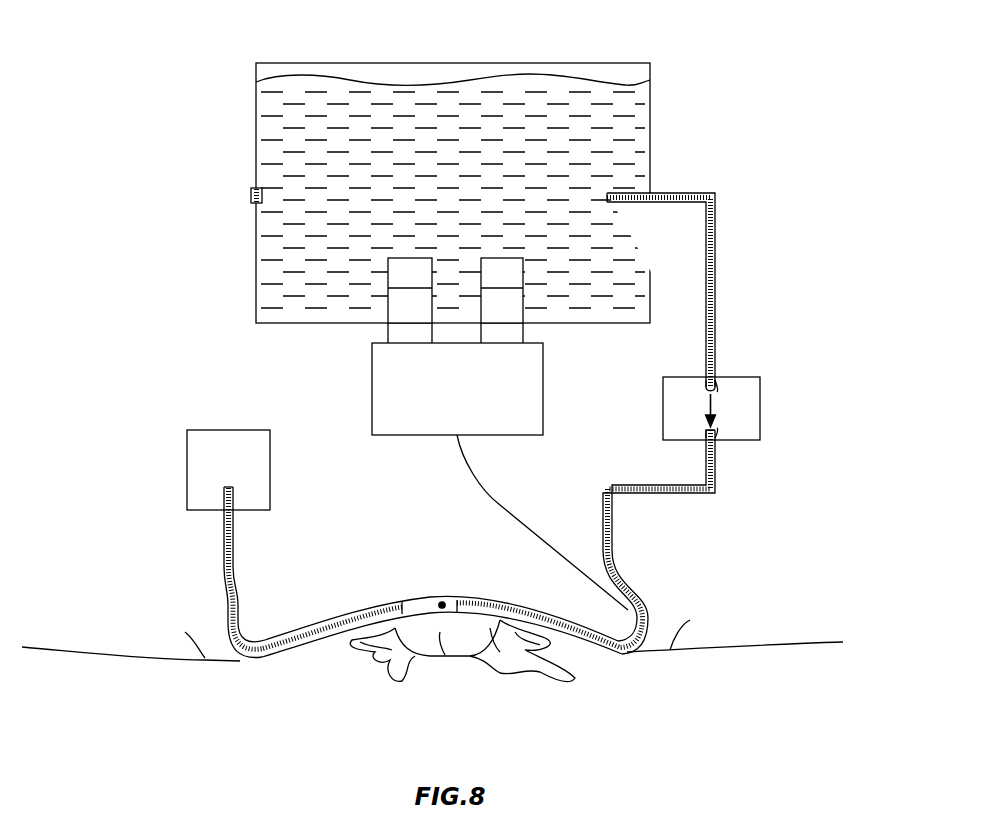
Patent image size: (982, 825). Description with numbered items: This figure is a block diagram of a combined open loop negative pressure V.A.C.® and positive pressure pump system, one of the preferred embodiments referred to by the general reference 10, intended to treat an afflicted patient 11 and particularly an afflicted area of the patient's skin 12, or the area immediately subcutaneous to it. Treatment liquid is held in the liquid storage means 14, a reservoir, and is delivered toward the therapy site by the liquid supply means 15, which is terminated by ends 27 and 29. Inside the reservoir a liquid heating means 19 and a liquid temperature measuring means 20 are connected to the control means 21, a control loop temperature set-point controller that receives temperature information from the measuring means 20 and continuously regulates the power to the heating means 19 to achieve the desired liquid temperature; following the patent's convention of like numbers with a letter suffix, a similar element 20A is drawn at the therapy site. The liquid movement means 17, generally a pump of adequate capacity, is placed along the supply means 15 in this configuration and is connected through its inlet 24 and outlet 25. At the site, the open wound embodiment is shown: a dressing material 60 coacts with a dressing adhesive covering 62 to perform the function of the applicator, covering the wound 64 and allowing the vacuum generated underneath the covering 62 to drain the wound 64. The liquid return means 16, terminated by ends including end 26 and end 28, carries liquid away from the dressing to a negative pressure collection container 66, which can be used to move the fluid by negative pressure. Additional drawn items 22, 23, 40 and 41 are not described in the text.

The preferred embodiment 10 is at (218, 50).
The liquid storage means 14 is at (617, 130).
The plugged port 23 is at (250, 196).
The end of liquid supply means 27 is at (607, 193).
The supply tube 22 is at (655, 193).
The liquid heating means 19 is at (410, 258).
The liquid temperature measuring means 20 is at (503, 258).
The control means 21 is at (527, 400).
The liquid movement means 17 is at (752, 410).
The pump inlet 40 is at (704, 374).
The inlet of liquid movement means 24 is at (717, 386).
The outlet of liquid movement means 25 is at (716, 430).
The pump outlet 41 is at (702, 440).
The liquid supply means 15 is at (716, 472).
The negative pressure collection container 66 is at (205, 440).
The end of liquid return means 28 is at (233, 488).
The liquid return means 16 is at (228, 578).
The dressing adhesive covering 62 is at (352, 618).
The end of liquid return means 26 is at (400, 612).
The end of liquid supply means 29 is at (463, 603).
The pad temperature sensor 20A is at (442, 600).
The afflicted patient 11 is at (655, 670).
The afflicted area of the patient's skin 12 is at (437, 665).
The dressing material 60 is at (447, 645).
The wound 64 is at (495, 640).